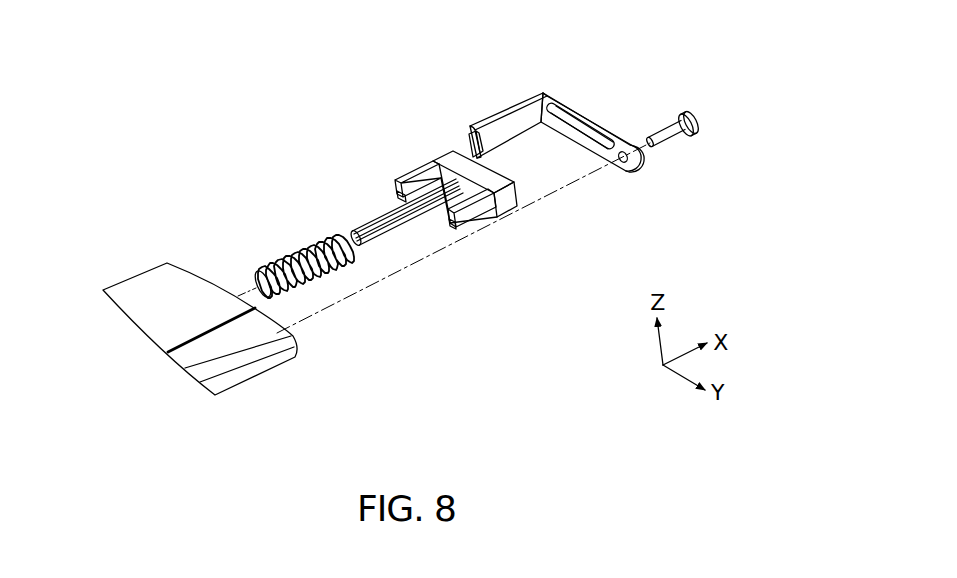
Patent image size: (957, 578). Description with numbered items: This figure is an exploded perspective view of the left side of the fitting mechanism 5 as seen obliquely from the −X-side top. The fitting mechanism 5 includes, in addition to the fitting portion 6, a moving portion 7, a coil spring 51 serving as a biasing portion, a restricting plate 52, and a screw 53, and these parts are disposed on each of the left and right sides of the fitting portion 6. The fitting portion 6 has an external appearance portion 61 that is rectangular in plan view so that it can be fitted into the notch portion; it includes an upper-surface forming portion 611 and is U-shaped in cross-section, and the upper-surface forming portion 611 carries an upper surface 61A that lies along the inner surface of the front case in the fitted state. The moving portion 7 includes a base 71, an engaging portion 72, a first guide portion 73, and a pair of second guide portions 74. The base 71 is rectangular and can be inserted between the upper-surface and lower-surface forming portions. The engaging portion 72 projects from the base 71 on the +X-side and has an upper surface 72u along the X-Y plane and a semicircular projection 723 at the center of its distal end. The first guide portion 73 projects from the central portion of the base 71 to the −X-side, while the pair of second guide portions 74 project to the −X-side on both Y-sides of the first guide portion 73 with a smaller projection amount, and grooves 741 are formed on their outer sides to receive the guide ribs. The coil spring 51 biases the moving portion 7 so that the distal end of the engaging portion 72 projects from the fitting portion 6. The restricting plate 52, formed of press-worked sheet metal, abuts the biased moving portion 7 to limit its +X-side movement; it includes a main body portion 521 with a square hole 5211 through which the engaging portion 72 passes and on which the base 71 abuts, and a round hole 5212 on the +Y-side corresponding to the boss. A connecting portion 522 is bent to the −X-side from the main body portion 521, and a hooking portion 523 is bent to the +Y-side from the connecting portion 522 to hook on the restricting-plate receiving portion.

The fitting mechanism 5 is at (177, 102).
The fitting portion 6 is at (120, 255).
The external appearance portion 61 is at (277, 360).
The upper-surface forming portion 611 is at (188, 283).
The upper surface 61A is at (155, 317).
The coil spring 51 is at (285, 230).
The moving portion 7 is at (398, 140).
The base 71 is at (505, 217).
The engaging portion 72 is at (510, 208).
The upper surface 72u is at (453, 155).
The projection 723 is at (500, 160).
The first guide portion 73 is at (407, 230).
The second guide portions 74 is at (395, 172).
The grooves 741 is at (398, 194).
The restricting plate 52 is at (492, 73).
The main body portion 521 is at (558, 103).
The square hole 5211 is at (588, 133).
The round hole 5212 is at (628, 168).
The connecting portion 522 is at (522, 113).
The hooking portion 523 is at (466, 143).
The screw 53 is at (705, 100).